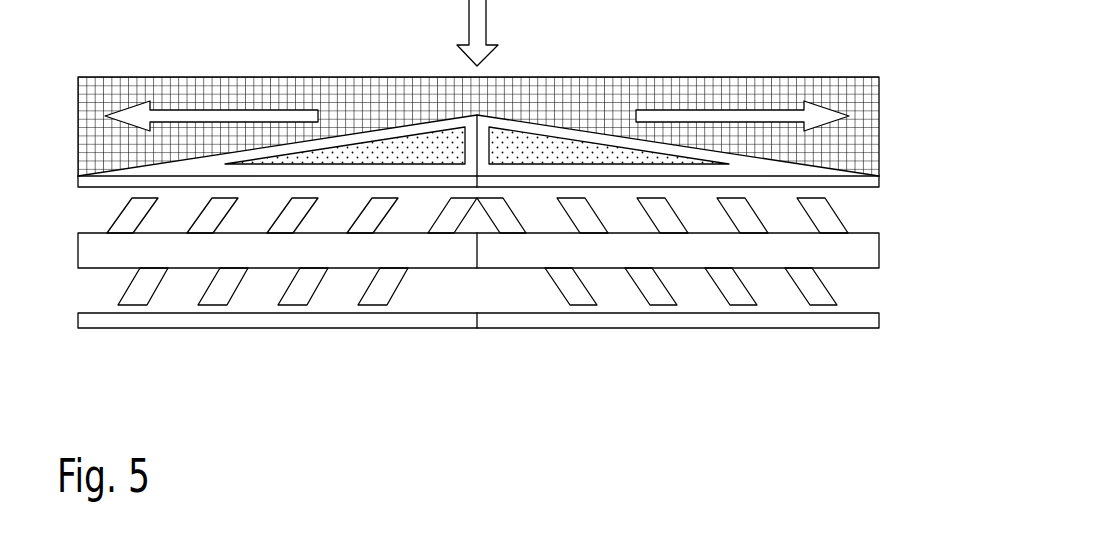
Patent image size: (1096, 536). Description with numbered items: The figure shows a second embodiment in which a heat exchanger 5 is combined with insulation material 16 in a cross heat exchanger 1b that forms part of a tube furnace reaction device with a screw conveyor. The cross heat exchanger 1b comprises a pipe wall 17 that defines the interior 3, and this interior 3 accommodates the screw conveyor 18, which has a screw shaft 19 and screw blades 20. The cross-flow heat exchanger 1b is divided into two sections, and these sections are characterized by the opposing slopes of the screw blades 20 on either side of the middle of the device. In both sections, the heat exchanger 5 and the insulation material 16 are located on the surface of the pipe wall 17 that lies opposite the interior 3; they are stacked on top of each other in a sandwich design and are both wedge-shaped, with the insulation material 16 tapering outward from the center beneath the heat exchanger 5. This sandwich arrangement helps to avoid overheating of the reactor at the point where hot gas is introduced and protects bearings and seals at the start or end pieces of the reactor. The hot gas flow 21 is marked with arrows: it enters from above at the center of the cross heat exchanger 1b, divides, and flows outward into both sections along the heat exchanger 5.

The cross heat exchanger 1b is at (495, 311).
The interior 3 is at (495, 259).
The heat exchanger 5 is at (218, 77).
The insulation material 16 is at (383, 150).
The pipe wall 17 is at (90, 182).
The screw conveyor 18 is at (886, 252).
The screw shaft 19 is at (862, 259).
The screw blades 20 is at (828, 218).
The hot gas flow 21 is at (488, 19).